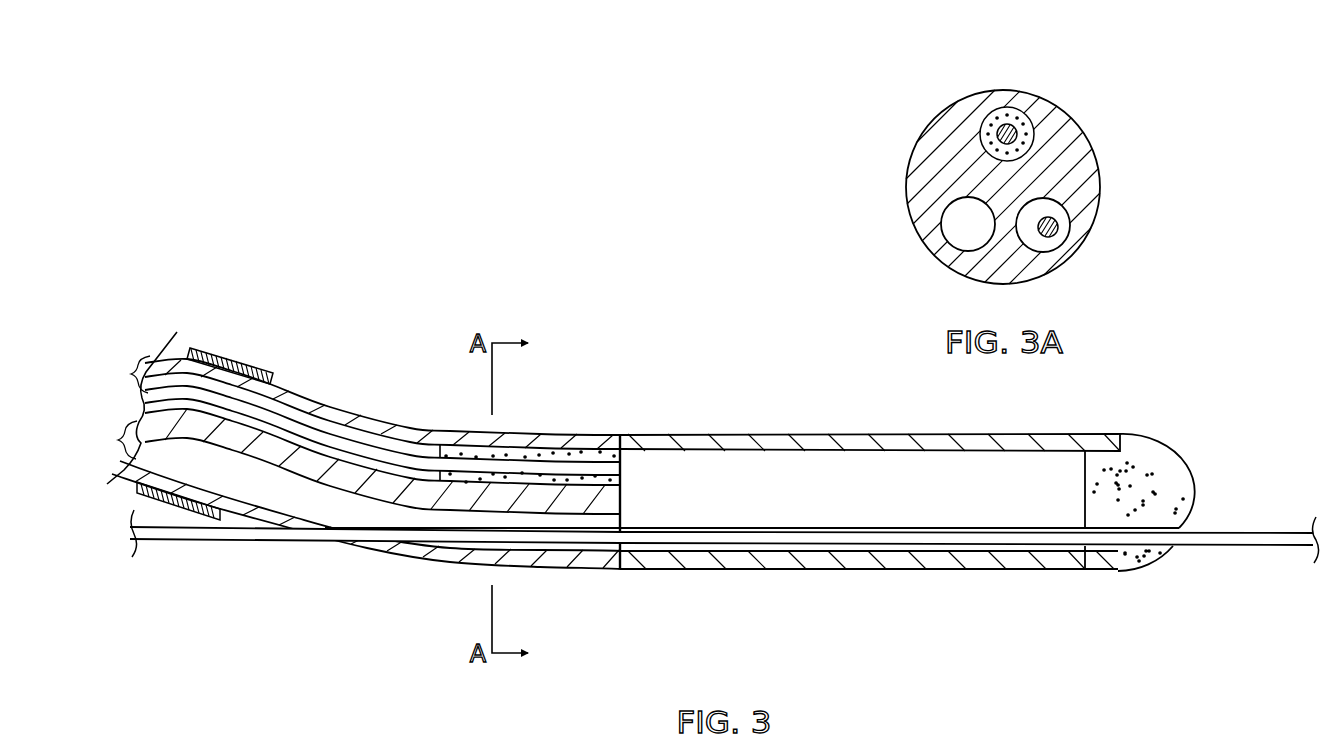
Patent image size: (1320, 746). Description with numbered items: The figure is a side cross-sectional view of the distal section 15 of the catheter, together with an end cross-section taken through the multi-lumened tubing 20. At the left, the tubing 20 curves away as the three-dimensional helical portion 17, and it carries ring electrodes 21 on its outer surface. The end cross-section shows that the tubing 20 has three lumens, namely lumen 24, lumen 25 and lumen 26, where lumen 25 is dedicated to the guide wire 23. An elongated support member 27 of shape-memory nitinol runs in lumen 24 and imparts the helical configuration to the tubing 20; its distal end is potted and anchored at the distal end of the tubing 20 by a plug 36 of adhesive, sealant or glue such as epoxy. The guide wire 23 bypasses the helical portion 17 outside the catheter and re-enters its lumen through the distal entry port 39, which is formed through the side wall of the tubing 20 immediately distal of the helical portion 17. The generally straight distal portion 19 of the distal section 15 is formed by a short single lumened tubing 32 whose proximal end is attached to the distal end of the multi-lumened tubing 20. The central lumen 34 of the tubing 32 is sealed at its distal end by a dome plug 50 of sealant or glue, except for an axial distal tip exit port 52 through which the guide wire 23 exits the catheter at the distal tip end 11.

In FIG. 3, the distal tip 11 is at (1190, 484).
In FIG. 3, the distal section 15 is at (757, 367).
In FIG. 3, the 3-D portion 17 is at (285, 566).
In FIG. 3, the generally straight distal portion 19 is at (730, 577).
In FIG. 3, the multi-lumened tubing 20 is at (572, 570).
In FIG. 3A, the multi-lumened tubing 20 is at (1100, 170).
In FIG. 3, the ring electrodes 21 is at (226, 354).
In FIG. 3, the guide wire 23 is at (190, 542).
In FIG. 3A, the guide wire 23 is at (1058, 230).
In FIG. 3, the lumen 24 is at (361, 411).
In FIG. 3A, the lumen 24 is at (1034, 130).
In FIG. 3, the lumen 25 is at (632, 471).
In FIG. 3A, the lumen 25 is at (1066, 204).
In FIG. 3A, the lumen 26 is at (941, 224).
In FIG. 3, the support member 27 is at (400, 452).
In FIG. 3A, the support member 27 is at (1007, 125).
In FIG. 3, the single lumened tubing 32 is at (960, 570).
In FIG. 3, the central lumen 34 is at (851, 510).
In FIG. 3, the plug 36 is at (571, 456).
In FIG. 3A, the plug 36 is at (981, 133).
In FIG. 3, the distal entry port 39 is at (367, 549).
In FIG. 3, the dome plug 50 is at (1160, 442).
In FIG. 3, the axial distal tip exit port 52 is at (1183, 527).